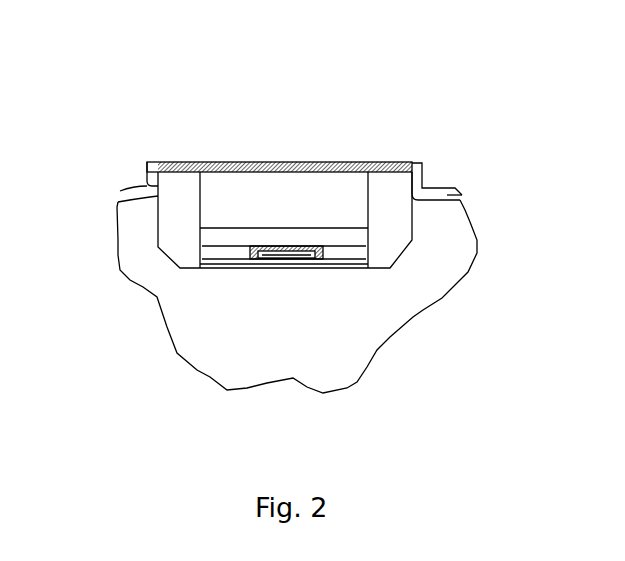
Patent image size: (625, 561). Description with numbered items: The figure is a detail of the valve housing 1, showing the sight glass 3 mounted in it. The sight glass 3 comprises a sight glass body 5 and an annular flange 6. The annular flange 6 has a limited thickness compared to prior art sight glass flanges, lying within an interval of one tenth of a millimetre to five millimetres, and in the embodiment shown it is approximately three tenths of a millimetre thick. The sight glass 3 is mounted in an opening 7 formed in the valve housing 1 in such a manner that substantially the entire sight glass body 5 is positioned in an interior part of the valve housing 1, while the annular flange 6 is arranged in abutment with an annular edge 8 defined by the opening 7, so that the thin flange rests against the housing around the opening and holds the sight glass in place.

The valve housing 1 is at (462, 195).
The sight glass 3 is at (173, 142).
The sight glass body 5 is at (390, 223).
The annular flange 6 is at (413, 164).
The opening 7 is at (152, 192).
The annular edge 8 is at (418, 167).